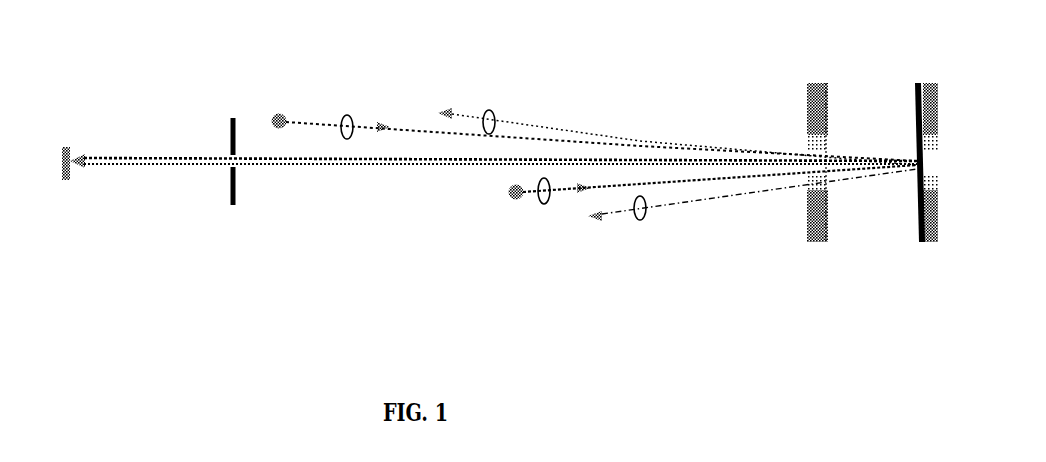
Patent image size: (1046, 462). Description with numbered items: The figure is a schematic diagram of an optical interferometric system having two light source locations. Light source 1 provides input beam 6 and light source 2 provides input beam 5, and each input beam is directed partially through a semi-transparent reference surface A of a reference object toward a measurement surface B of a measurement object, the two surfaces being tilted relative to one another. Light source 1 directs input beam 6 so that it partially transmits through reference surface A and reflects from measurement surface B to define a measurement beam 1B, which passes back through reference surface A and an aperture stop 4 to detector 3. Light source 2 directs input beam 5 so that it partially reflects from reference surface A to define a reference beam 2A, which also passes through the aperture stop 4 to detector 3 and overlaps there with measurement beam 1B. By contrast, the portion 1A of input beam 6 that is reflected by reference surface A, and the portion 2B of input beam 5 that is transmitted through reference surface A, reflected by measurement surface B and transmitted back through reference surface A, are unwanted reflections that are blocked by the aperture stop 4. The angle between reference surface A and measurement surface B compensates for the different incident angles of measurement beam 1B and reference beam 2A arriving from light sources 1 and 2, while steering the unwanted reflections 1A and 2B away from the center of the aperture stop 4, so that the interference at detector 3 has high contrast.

The light source 1 is at (698, 188).
The portion of input beam 6 1A is at (491, 110).
The measurement beam 1B is at (176, 168).
The light source 2 is at (592, 116).
The reference beam 2A is at (131, 153).
The portion of input beam 5 2B is at (643, 220).
The detector 3 is at (70, 148).
The aperture stop 4 is at (227, 184).
The input beam 5 is at (350, 115).
The input beam 6 is at (547, 204).
The reference surface A is at (833, 100).
The measurement surface B is at (911, 100).